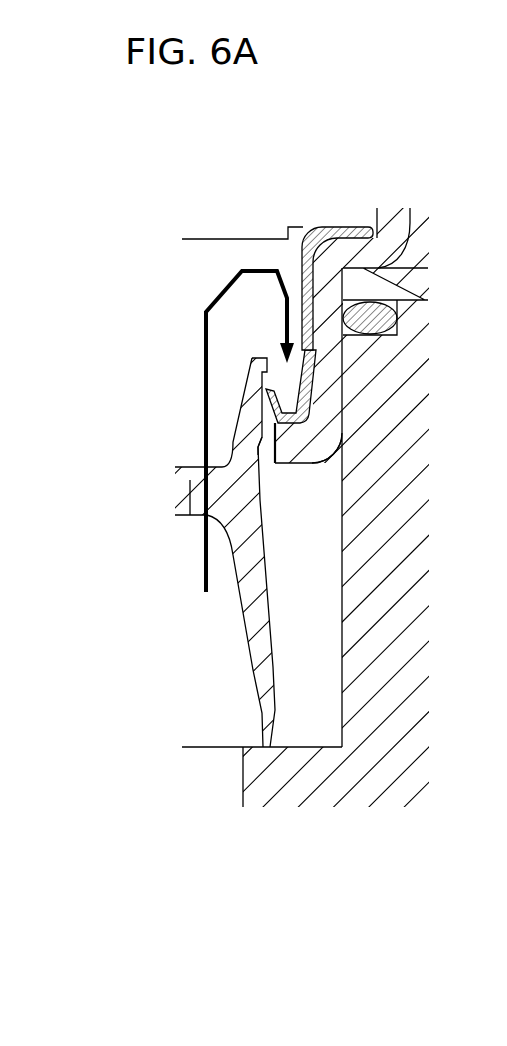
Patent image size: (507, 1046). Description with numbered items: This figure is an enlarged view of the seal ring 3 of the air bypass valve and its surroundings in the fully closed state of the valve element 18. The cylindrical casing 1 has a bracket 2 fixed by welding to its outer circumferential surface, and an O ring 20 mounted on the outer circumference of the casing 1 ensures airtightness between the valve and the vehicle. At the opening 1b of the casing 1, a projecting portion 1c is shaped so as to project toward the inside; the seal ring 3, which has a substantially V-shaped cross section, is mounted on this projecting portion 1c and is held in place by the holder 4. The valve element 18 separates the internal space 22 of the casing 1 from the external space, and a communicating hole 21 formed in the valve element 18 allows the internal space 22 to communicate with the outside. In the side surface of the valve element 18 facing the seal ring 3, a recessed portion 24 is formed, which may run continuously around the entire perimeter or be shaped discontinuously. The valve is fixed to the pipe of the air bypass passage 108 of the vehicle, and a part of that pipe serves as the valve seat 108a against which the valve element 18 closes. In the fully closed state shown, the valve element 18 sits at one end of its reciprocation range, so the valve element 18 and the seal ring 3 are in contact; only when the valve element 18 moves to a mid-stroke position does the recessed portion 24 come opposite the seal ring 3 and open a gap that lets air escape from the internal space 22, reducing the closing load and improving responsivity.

The casing 1 is at (400, 228).
The opening 1b is at (260, 450).
The projecting portion 1c is at (312, 463).
The bracket 2 is at (416, 291).
The seal ring 3 is at (313, 382).
The holder 4 is at (342, 228).
The valve element 18 is at (247, 627).
The O ring 20 is at (385, 318).
The communicating hole 21 is at (195, 516).
The internal space 22 is at (214, 258).
The recessed portion 24 is at (262, 455).
The air bypass passage 108 is at (203, 722).
The valve seat 108a is at (280, 747).